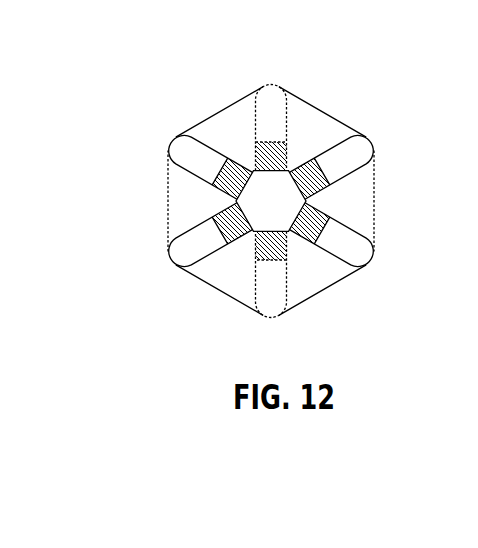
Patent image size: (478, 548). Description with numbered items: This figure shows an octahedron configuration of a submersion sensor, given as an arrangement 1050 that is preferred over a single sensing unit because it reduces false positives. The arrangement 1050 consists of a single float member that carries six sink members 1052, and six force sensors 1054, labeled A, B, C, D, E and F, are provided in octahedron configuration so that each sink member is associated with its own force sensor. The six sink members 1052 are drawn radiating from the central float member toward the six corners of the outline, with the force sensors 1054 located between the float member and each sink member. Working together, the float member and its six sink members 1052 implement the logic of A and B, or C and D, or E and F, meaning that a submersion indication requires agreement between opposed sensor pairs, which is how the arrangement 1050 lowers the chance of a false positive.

The arrangement 1050 is at (259, 222).
The sink members 1052 is at (375, 203).
The force sensors 1054 is at (337, 141).